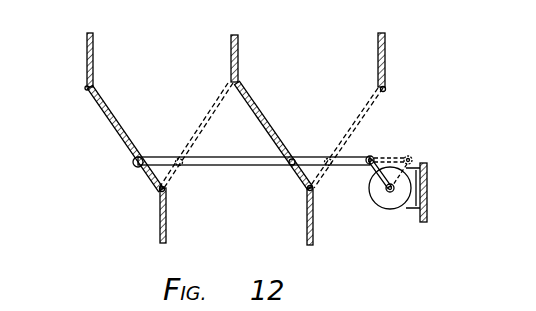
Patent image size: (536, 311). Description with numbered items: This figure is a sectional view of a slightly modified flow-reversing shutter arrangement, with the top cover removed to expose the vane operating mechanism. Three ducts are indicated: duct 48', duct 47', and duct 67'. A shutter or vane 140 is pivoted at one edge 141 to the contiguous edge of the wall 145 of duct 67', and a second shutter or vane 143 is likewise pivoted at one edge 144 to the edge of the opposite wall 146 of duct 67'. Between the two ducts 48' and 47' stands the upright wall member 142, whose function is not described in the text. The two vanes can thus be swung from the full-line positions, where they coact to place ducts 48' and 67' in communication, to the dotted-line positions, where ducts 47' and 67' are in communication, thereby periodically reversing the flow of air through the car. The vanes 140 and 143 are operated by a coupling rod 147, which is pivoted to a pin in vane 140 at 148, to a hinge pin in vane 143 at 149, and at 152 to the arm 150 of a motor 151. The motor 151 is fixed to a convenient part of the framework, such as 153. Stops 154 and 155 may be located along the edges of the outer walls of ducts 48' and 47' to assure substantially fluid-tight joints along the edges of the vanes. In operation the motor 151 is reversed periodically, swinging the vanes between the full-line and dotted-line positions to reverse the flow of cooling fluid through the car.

The shutter or vane 140 is at (110, 127).
The pivoted edge 141 is at (156, 192).
The upright post 142 is at (237, 39).
The shutter or vane 143 is at (267, 122).
The pivoted edge 144 is at (307, 190).
The wall 145 is at (160, 230).
The opposite wall 146 is at (313, 227).
The coupling rod 147 is at (202, 162).
The pin 148 is at (142, 158).
The hinge pin 149 is at (291, 160).
The arm 150 is at (368, 173).
The motor 151 is at (386, 207).
The pivot 152 is at (372, 157).
The framework 153 is at (427, 170).
The stop 154 is at (83, 88).
The stop 155 is at (388, 90).
The duct 48' is at (158, 54).
The duct 47' is at (305, 57).
The duct 67' is at (235, 232).